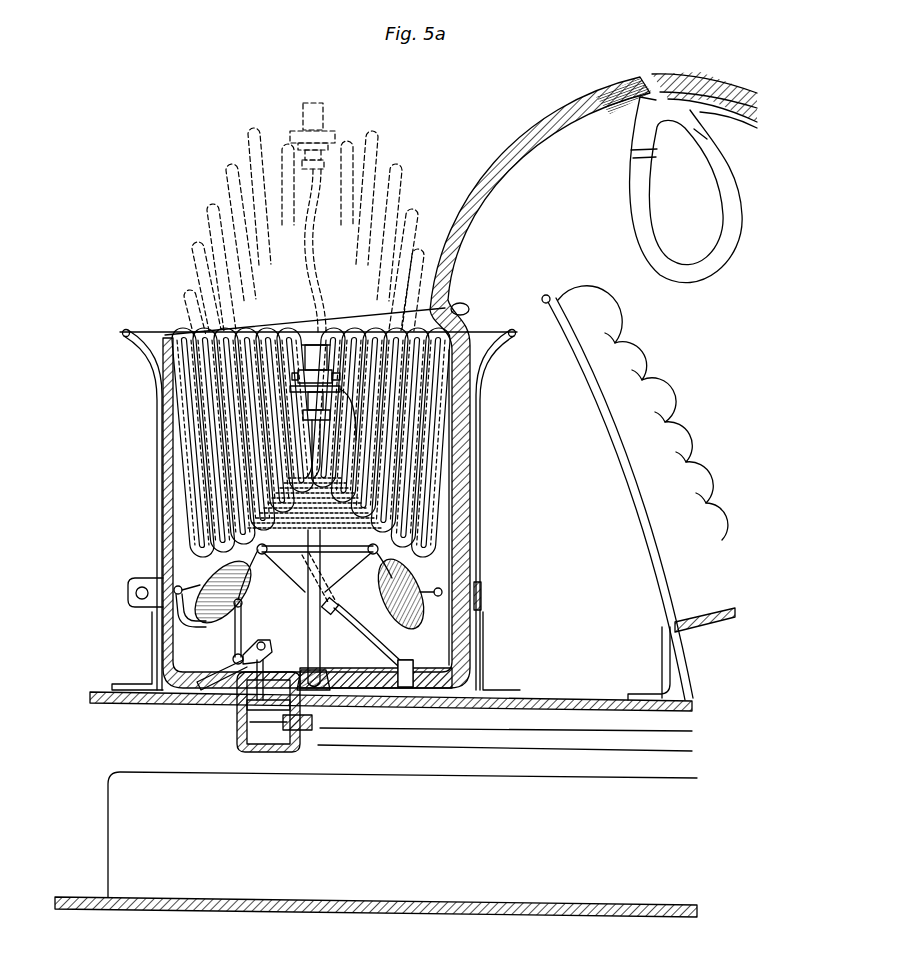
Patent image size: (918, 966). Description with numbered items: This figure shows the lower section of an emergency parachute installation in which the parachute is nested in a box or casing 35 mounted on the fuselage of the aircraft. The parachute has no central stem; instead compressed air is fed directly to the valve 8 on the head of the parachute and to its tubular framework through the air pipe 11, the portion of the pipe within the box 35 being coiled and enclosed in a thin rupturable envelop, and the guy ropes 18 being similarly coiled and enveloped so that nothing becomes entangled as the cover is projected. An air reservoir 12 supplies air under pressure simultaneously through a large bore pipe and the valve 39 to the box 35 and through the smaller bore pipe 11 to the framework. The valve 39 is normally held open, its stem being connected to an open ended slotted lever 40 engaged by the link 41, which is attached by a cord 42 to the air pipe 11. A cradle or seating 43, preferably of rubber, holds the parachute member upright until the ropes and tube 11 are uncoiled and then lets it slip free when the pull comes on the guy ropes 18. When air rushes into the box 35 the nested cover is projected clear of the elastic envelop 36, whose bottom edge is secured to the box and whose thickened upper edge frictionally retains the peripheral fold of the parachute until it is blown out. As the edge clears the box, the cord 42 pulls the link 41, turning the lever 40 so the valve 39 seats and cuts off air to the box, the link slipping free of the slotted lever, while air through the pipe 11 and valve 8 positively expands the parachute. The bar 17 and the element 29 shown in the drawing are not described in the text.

The valve 8 is at (310, 344).
The air pipe 11 is at (257, 528).
The air reservoir 12 is at (402, 834).
The cross bar 17 is at (380, 548).
The guy ropes 18 is at (222, 575).
The link rod 29 is at (325, 598).
The box or casing 35 is at (145, 336).
The elastic envelop 36 is at (173, 462).
The valve 39 is at (240, 704).
The open ended slotted lever 40 is at (218, 664).
The link 41 is at (236, 638).
The cord 42 is at (306, 588).
The cradle or seating 43 is at (290, 640).